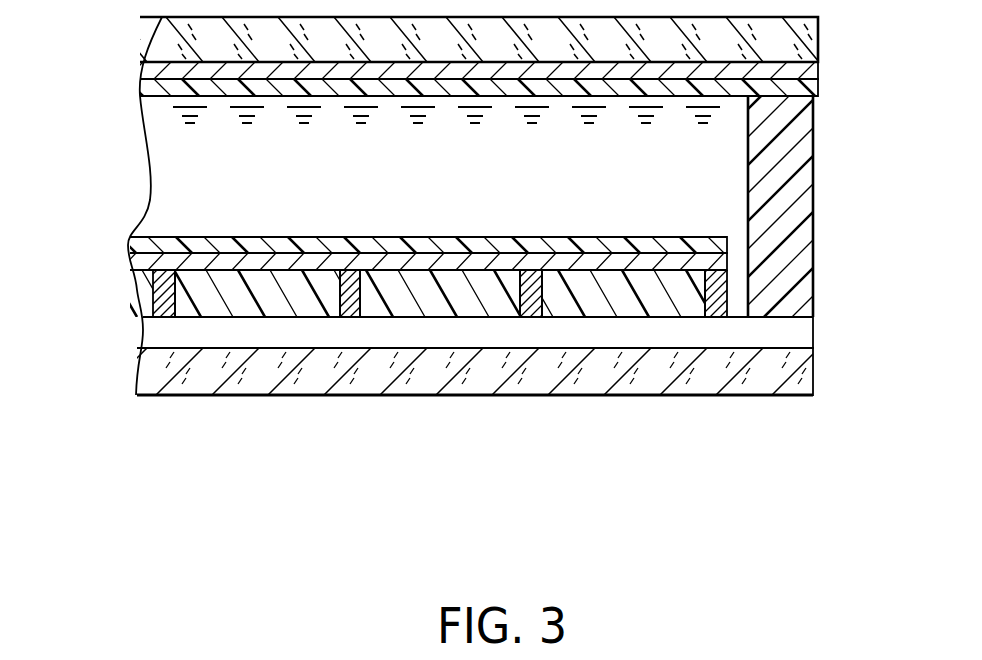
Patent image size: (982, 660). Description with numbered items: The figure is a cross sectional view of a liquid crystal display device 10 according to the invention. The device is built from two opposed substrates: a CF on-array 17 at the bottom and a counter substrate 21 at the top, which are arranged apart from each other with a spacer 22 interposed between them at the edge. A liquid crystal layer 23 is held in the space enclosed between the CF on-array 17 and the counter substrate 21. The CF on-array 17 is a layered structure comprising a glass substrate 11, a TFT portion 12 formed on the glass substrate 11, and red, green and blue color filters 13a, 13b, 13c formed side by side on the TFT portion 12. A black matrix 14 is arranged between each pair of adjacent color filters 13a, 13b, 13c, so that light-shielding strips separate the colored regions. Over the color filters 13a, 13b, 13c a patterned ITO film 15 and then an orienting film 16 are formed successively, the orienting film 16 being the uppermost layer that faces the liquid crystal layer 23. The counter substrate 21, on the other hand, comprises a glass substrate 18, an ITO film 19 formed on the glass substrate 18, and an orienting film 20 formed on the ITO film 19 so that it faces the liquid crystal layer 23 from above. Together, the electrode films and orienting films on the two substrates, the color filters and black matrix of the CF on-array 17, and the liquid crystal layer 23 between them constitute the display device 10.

The liquid crystal display device 10 is at (499, 253).
The glass substrate 11 is at (797, 374).
The TFT portion 12 is at (797, 334).
The red color filter 13a is at (270, 317).
The green color filter 13b is at (445, 317).
The blue color filter 13c is at (668, 317).
The black matrix 14 is at (357, 317).
The patterned ITO film 15 is at (128, 270).
The orienting film 16 is at (133, 247).
The CF on-array 17 is at (437, 341).
The glass substrate 18 is at (812, 27).
The ITO film 19 is at (805, 68).
The orienting film 20 is at (495, 84).
The counter substrate 21 is at (512, 55).
The spacer 22 is at (797, 214).
The liquid crystal layer 23 is at (155, 129).